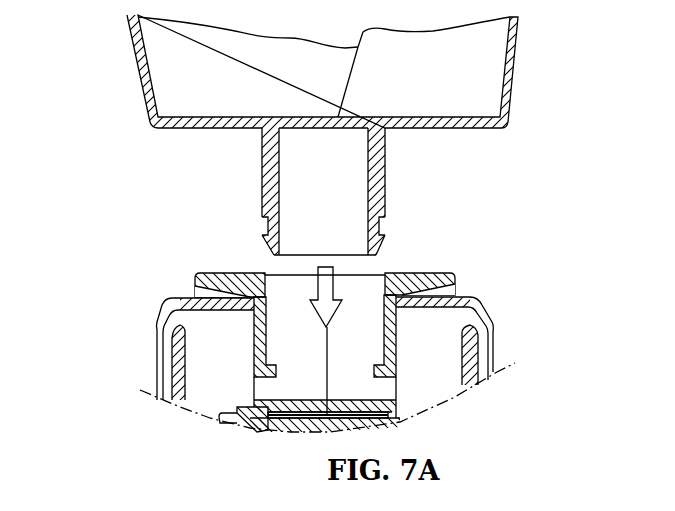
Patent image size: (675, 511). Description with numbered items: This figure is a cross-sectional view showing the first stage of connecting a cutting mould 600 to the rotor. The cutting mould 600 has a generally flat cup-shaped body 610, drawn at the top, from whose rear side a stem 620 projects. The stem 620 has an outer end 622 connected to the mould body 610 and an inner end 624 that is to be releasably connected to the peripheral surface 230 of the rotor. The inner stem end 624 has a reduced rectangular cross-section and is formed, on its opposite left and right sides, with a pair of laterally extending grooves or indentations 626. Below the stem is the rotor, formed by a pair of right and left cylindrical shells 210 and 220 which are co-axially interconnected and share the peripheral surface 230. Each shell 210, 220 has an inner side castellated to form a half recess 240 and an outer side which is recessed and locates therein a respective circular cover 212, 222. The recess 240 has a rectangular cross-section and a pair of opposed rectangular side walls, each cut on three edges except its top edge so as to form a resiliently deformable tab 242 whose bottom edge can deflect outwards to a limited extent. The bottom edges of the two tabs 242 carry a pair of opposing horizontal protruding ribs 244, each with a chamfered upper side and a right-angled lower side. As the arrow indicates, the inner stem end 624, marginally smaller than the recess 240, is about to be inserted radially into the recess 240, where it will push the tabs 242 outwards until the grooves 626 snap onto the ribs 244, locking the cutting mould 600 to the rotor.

The cutting mould 600 is at (148, 177).
The cup-shaped body 610 is at (160, 62).
The stem 620 is at (338, 178).
The outer end 622 is at (383, 138).
The inner end 624 is at (380, 251).
The grooves/indentations 626 is at (263, 224).
The cylindrical shell 210 is at (218, 283).
The circular cover 212 is at (158, 317).
The cylindrical shell 220 is at (420, 285).
The circular cover 222 is at (478, 303).
The peripheral surface 230 is at (413, 268).
The recess 240 is at (285, 290).
The resiliently deformable tab 242 is at (257, 340).
The protruding rib 244 is at (273, 369).